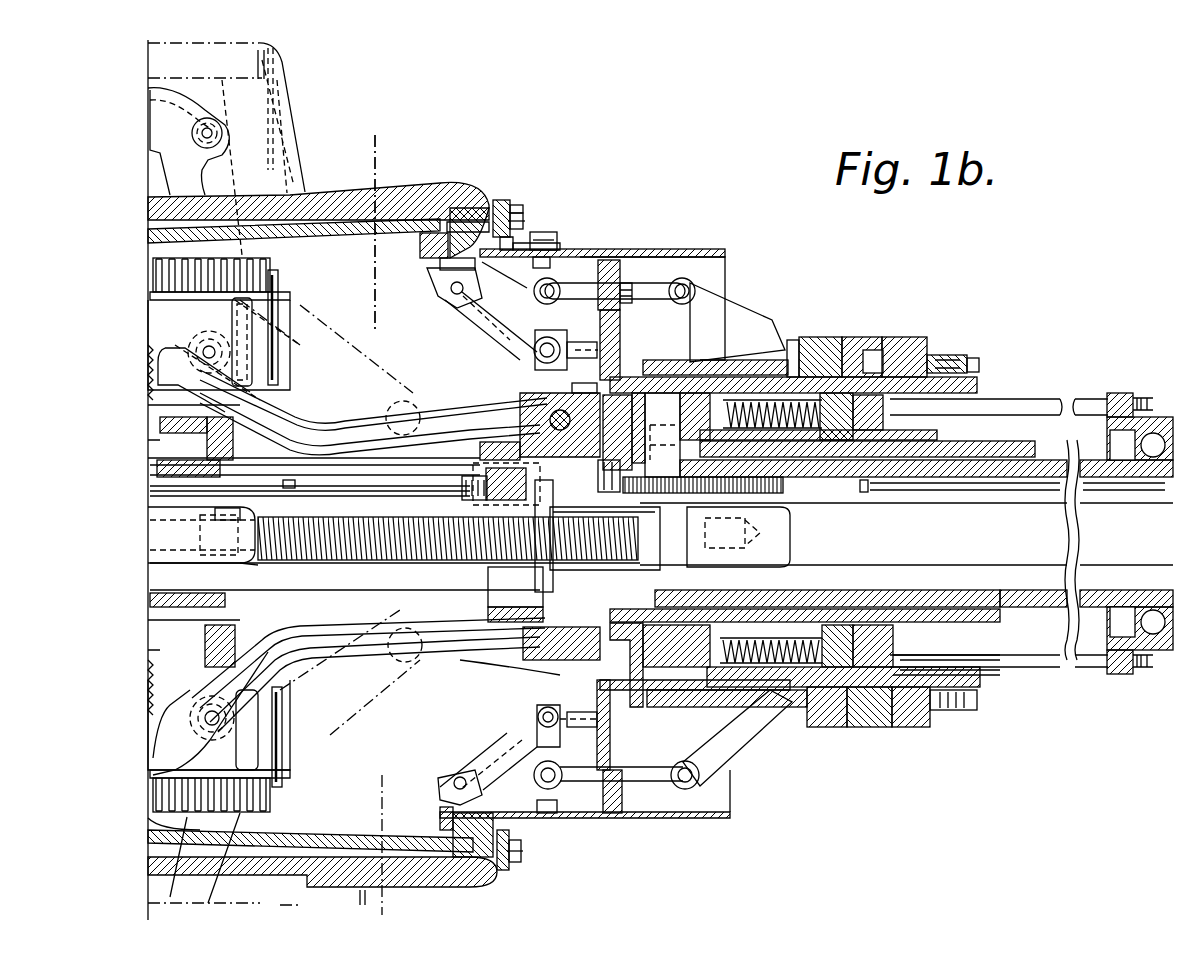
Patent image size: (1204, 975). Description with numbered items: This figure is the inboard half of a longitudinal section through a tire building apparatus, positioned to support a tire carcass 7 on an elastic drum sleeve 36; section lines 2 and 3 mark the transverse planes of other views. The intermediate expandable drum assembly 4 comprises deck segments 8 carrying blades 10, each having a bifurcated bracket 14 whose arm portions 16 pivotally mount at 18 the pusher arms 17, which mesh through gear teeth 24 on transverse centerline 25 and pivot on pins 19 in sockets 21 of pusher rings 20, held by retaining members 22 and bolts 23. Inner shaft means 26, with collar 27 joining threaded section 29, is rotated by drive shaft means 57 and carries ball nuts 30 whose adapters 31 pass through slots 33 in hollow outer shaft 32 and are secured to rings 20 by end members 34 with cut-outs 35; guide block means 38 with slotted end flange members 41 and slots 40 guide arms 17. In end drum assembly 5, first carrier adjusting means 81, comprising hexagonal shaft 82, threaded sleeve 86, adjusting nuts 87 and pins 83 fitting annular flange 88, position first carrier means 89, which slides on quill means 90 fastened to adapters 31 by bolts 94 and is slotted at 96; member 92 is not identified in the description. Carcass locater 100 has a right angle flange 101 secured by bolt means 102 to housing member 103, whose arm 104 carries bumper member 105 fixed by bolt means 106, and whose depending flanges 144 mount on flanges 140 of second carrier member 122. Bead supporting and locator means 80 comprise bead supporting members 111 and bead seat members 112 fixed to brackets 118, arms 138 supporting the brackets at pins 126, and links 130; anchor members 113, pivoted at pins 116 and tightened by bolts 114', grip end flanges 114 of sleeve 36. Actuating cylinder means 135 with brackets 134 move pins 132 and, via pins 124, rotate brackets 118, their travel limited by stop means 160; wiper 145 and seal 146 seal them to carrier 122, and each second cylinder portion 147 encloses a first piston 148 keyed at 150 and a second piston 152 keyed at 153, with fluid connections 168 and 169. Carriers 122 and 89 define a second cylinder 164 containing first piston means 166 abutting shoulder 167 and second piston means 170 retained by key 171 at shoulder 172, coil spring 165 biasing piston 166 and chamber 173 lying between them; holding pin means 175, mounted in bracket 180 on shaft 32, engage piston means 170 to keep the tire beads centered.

The section line 2- 2 is at (348, 118).
The section line 3- 3 is at (412, 160).
The intermediate expandable drum assembly 4 is at (286, 288).
The inboard end drum assembly 5 is at (663, 215).
The tire carcass 7 is at (402, 196).
The deck segments 8 is at (274, 370).
The blades 10 is at (250, 258).
The bifurcated bracket 14 is at (204, 322).
The opposed arm portions 16 is at (165, 345).
The pusher arms 17 is at (335, 430).
The pivot 18 is at (205, 365).
The pivot pins 19 is at (545, 402).
The pusher rings 20 is at (540, 431).
The annular sockets 21 is at (520, 675).
The retaining members 22 is at (573, 676).
The bolts 23 is at (575, 395).
The meshing gear teeth 24 is at (150, 380).
The transverse centerline 25 is at (150, 738).
The inner shaft means 26 is at (407, 554).
The collar 27 is at (253, 555).
The right hand threaded shaft section 29 is at (480, 555).
The ball nuts 30 is at (615, 565).
The ball nut adapters 31 is at (510, 596).
The hollow outer shaft 32 is at (812, 596).
The axially extending slots 33 is at (248, 568).
The end members 34 is at (505, 585).
The cut-outs 35 is at (575, 572).
The elastic drum sleeve 36 is at (300, 232).
The guide block means 38 is at (237, 454).
The slots 40 is at (232, 660).
The slotted end flange members 41 is at (282, 705).
The drive shaft means 57 is at (948, 539).
The bead supporting and locator means 80 is at (468, 200).
The first carrier adjusting means 81 is at (412, 498).
The hexagonal shaft 82 is at (185, 492).
The pins 83 is at (665, 415).
The left hand threaded sleeve 86 is at (755, 492).
The adjusting nuts 87 is at (608, 472).
The annular flange 88 is at (640, 392).
The first carrier means 89 is at (945, 436).
The quill means 90 is at (1035, 447).
The bracket 92 is at (617, 429).
The bolts 94 is at (662, 435).
The slot 96 is at (765, 460).
The approximate carcass locater 100 is at (528, 215).
The right angle annular flange 101 is at (532, 258).
The bolt means 102 is at (548, 248).
The outer annular housing member 103 is at (680, 250).
The radially outwardly extending arm 104 is at (509, 196).
The bumper member 105 is at (497, 200).
The bolt means 106 is at (540, 235).
The bead supporting members 111 is at (452, 196).
The bead seat members 112 is at (500, 258).
The anchor members 113 is at (445, 272).
The enlarged annular end flanges 114 is at (414, 245).
The bolts 114' is at (440, 288).
The pins 116 is at (462, 305).
The brackets 118 is at (485, 320).
The second carrier member 122 is at (712, 376).
The pins 124 is at (598, 285).
The pins 126 is at (538, 350).
The links 130 is at (660, 292).
The pins 132 is at (700, 292).
The extending brackets 134 is at (740, 325).
The actuating cylinder means 135 is at (740, 362).
The arms 138 is at (570, 345).
The outwardly extending flanges 140 is at (612, 320).
The depending annular flanges 144 is at (620, 262).
The wiper 145 is at (657, 708).
The seal 146 is at (768, 700).
The second cylinder portion 147 is at (880, 725).
The first piston 148 is at (848, 715).
The key 150 is at (858, 340).
The second piston 152 is at (908, 342).
The key 153 is at (925, 358).
The stop means 160 is at (970, 362).
The second cylinder 164 is at (795, 735).
The coil spring 165 is at (812, 380).
The first piston means 166 is at (845, 630).
The shoulder 167 is at (835, 632).
The fluid pressure connection 168 is at (805, 345).
The fluid pressure connection 169 is at (880, 345).
The second piston means 170 is at (900, 728).
The key 171 is at (940, 720).
The shoulder 172 is at (858, 730).
The chamber 173 is at (846, 489).
The holding pin means 175 is at (1035, 398).
The bracket 180 is at (1115, 395).